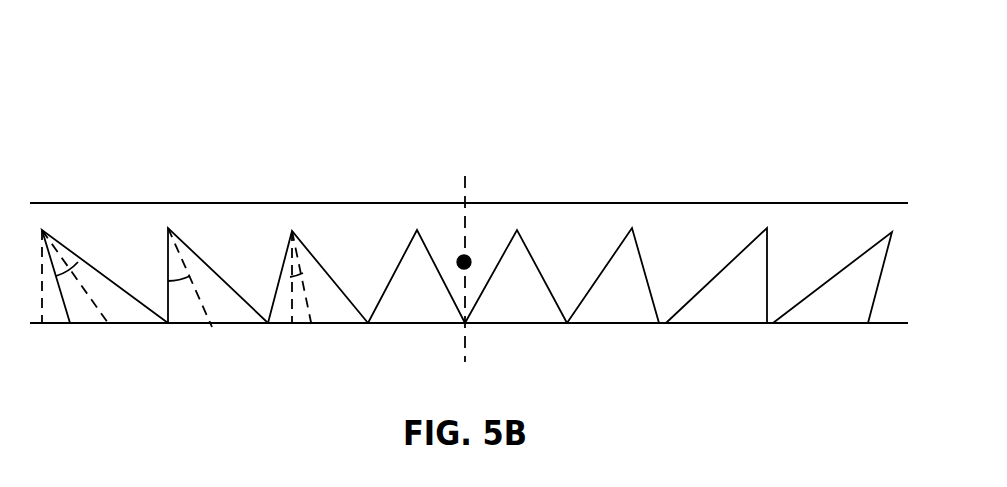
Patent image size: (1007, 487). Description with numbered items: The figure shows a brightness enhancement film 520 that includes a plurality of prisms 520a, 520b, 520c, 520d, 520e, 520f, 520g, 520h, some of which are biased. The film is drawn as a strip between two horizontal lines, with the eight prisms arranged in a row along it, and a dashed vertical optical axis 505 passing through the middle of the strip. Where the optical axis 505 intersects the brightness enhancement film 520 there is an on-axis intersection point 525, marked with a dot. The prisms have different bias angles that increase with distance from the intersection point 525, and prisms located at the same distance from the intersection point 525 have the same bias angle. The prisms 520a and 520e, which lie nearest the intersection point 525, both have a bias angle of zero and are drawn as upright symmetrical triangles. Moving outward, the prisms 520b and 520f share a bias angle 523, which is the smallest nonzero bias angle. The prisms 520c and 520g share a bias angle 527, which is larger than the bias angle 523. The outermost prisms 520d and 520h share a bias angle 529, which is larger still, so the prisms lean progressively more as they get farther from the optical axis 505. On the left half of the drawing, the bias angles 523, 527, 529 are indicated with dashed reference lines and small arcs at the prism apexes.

The brightness enhancement film 520 is at (488, 63).
The optical axis 505 is at (486, 170).
The intersection point 525 is at (466, 268).
The prism 520a is at (423, 260).
The prism 520b is at (308, 258).
The prism 520c is at (208, 262).
The prism 520d is at (88, 262).
The prism 520e is at (525, 275).
The prism 520f is at (635, 270).
The prism 520g is at (738, 268).
The prism 520h is at (862, 277).
The bias angle 523 is at (294, 280).
The bias angle 527 is at (185, 287).
The bias angle 529 is at (67, 280).